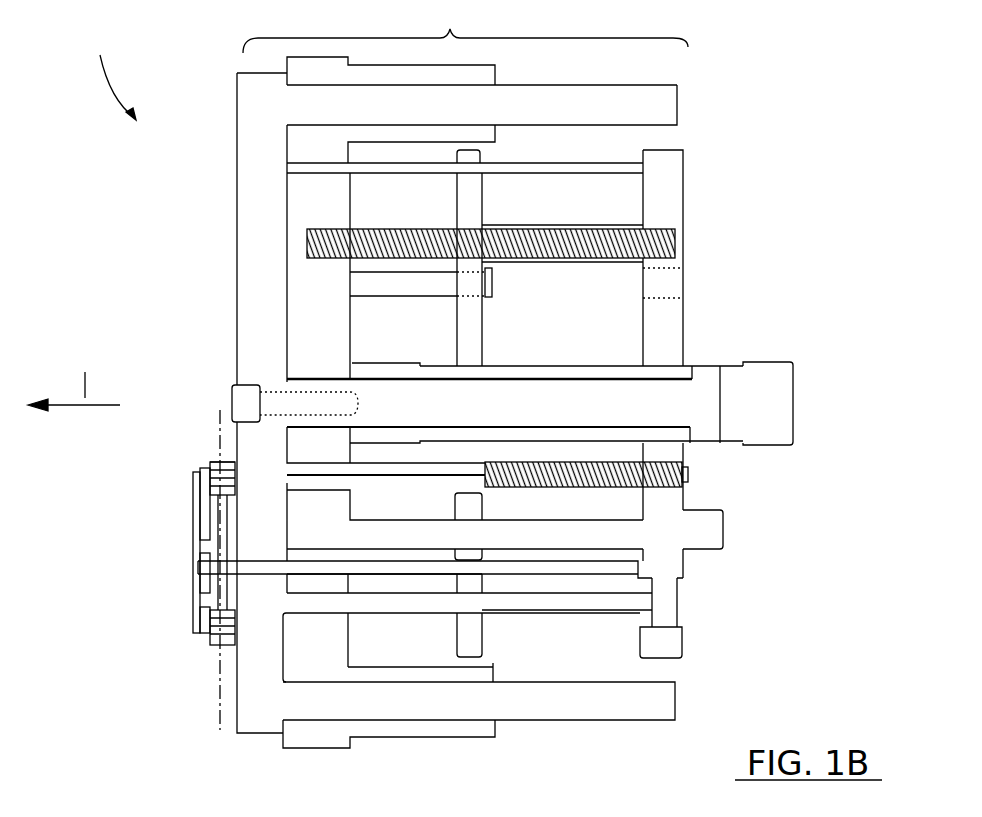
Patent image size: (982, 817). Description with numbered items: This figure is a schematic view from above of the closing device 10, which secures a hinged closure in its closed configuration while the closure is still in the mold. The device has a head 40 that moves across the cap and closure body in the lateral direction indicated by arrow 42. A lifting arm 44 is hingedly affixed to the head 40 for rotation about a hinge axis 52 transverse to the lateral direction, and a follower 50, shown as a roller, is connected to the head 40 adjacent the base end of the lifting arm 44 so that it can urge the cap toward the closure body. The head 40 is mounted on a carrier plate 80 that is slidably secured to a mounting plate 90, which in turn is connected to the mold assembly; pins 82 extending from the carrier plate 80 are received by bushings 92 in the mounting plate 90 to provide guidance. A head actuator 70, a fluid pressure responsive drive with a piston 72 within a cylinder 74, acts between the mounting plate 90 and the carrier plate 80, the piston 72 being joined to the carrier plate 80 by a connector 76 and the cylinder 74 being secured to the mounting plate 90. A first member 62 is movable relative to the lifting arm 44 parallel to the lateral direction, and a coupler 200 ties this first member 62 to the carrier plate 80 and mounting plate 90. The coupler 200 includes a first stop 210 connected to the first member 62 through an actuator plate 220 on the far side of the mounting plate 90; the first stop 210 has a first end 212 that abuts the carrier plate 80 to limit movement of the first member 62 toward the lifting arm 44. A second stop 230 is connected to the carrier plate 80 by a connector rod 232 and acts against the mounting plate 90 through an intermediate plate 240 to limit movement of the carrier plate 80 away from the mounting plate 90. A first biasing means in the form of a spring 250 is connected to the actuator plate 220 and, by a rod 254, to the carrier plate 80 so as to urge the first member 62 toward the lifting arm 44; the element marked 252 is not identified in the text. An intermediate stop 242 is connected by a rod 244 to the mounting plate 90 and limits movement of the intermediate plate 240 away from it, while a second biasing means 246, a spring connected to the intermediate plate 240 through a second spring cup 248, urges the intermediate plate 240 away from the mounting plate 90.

The closing device 10 is at (112, 73).
The coupler 200 is at (465, 26).
The bushings 92 is at (497, 74).
The pins 82 is at (540, 110).
The first stop 210 is at (303, 163).
The first end 212 is at (287, 170).
The actuator plate 220 is at (668, 178).
The carrier plate 80 is at (240, 267).
The intermediate plate 240 is at (488, 200).
The mounting plate 90 is at (325, 340).
The second biasing means 246 is at (455, 232).
The second spring cup 248 is at (620, 258).
The rod 244 is at (367, 285).
The intermediate stop 242 is at (492, 290).
The head actuator 70 is at (720, 452).
The piston 72 is at (707, 380).
The cylinder 74 is at (800, 373).
The connector 76 is at (232, 390).
The lateral direction 42 is at (74, 376).
The rod 254 is at (423, 472).
The nut 252 is at (455, 508).
The first biasing means 250 is at (540, 490).
The first member 62 is at (545, 567).
The connector rod 232 is at (590, 608).
The second stop 230 is at (665, 613).
The lifting arm 44 is at (193, 505).
The follower 50 is at (205, 470).
The head 40 is at (218, 465).
The hinge axis 52 is at (218, 683).